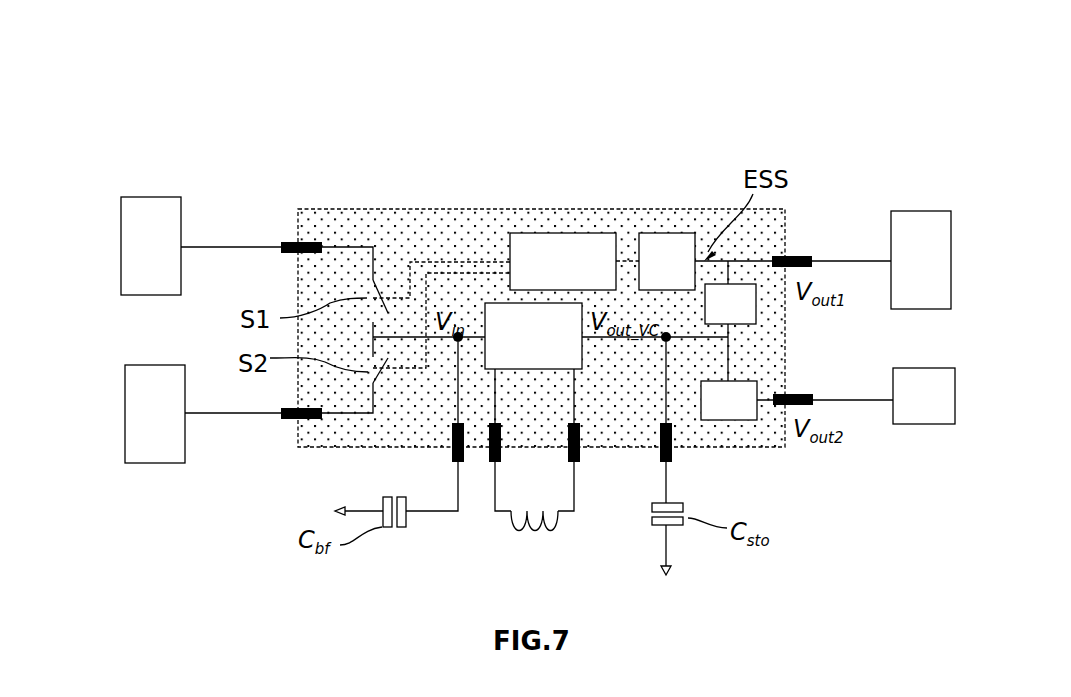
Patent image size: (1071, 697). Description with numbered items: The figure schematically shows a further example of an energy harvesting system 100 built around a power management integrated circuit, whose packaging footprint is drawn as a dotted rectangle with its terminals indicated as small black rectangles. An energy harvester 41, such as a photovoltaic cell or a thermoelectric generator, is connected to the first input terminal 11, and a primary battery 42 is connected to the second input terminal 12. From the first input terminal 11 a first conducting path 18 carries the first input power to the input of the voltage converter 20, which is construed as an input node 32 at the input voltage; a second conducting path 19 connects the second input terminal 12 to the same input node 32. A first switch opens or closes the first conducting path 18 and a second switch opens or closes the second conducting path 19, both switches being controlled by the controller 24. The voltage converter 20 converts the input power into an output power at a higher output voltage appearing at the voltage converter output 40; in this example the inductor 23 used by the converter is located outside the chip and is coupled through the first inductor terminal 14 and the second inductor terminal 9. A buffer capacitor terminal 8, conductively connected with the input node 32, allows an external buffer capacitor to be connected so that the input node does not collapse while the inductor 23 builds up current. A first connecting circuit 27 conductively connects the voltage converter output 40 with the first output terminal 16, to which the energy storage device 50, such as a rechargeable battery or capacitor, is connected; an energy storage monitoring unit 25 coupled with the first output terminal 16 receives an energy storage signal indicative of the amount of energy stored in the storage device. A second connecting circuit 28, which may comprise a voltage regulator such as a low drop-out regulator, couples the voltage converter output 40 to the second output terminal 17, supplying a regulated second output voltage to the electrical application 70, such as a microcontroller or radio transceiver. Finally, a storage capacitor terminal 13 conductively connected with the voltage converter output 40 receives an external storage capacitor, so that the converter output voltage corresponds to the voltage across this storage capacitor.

The energy harvesting system 100 is at (206, 102).
The buffer capacitor terminal 8 is at (452, 455).
The second inductor terminal 9 is at (580, 452).
The first input terminal 11 is at (290, 242).
The second input terminal 12 is at (290, 420).
The storage capacitor terminal 13 is at (673, 452).
The first inductor terminal 14 is at (501, 452).
The first output terminal 16 is at (790, 256).
The second output terminal 17 is at (800, 394).
The first conducting path 18 is at (377, 256).
The second conducting path 19 is at (375, 399).
The voltage converter 20 is at (527, 369).
The inductor 23 is at (542, 535).
The controller 24 is at (561, 233).
The energy storage monitoring unit 25 is at (667, 233).
The first connecting circuit 27 is at (757, 300).
The second connecting circuit 28 is at (733, 420).
The input node 32 is at (452, 346).
The voltage converter output 40 is at (661, 342).
The energy harvester 41 is at (121, 255).
The primary battery 42 is at (125, 410).
The energy storage device 50 is at (917, 211).
The electrical application 70 is at (923, 424).